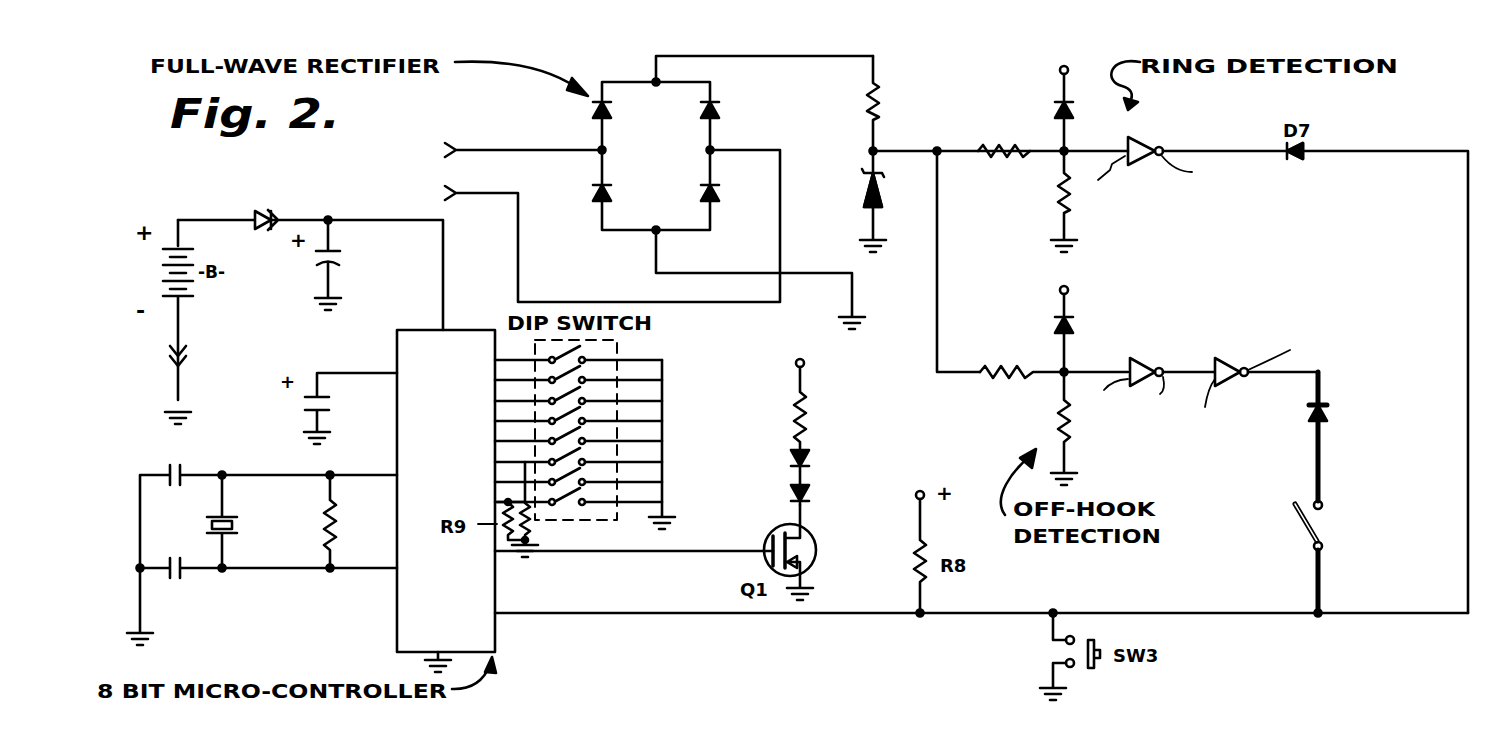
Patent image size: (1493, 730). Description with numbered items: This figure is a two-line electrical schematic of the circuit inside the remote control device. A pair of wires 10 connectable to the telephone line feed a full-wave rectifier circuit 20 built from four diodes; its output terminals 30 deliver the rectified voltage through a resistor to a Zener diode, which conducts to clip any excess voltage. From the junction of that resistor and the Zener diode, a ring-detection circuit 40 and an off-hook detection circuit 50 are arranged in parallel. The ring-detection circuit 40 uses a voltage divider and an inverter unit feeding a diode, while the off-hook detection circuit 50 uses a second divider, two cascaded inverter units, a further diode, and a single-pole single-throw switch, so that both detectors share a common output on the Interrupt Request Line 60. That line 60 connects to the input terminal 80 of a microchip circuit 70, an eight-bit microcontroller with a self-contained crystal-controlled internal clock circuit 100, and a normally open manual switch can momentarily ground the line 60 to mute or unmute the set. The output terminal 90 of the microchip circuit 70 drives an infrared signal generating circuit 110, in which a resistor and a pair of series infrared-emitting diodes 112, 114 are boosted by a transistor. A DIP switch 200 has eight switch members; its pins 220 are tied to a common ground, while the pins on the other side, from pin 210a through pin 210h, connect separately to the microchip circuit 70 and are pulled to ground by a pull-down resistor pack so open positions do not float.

The pair of wires 10 is at (498, 192).
The full-wave rectifier circuit 20 is at (733, 192).
The output terminals of rectifier 30 is at (876, 62).
The ring-detection circuit 40 is at (1132, 152).
The off-hook detection circuit 50 is at (1149, 380).
The Interrupt Request Line 60 is at (1210, 615).
The microchip circuit 70 is at (388, 616).
The input terminal 80 is at (498, 616).
The output terminal 90 is at (498, 554).
The crystal-controlled internal logical clock circuit 100 is at (262, 542).
The infrared signal generating circuit 110 is at (851, 456).
The infrared-emitting diode 112 is at (808, 456).
The infrared-emitting diode 114 is at (812, 500).
The DIP switch 200 is at (532, 453).
The pin 210a is at (497, 368).
The pin 210h is at (543, 504).
The pins 220 is at (668, 344).